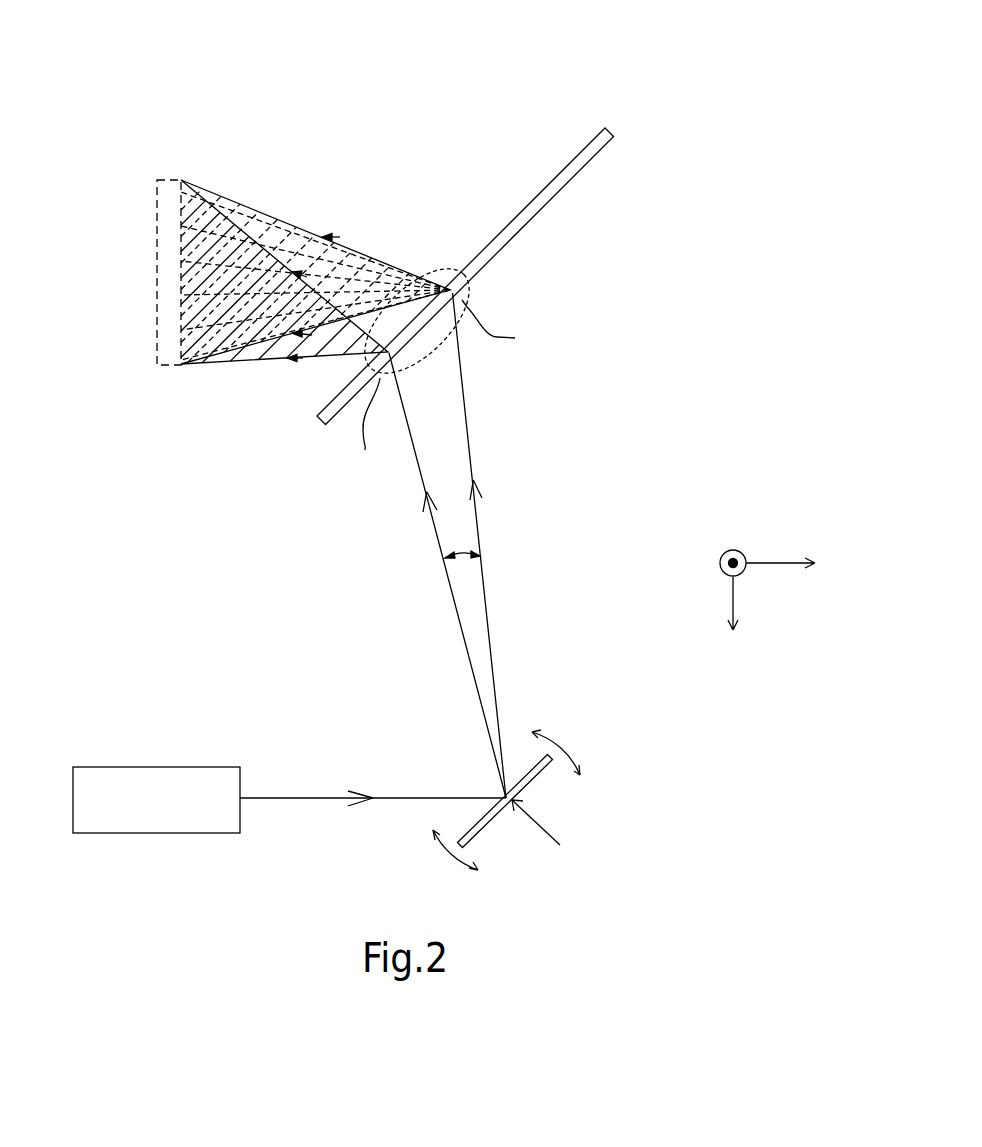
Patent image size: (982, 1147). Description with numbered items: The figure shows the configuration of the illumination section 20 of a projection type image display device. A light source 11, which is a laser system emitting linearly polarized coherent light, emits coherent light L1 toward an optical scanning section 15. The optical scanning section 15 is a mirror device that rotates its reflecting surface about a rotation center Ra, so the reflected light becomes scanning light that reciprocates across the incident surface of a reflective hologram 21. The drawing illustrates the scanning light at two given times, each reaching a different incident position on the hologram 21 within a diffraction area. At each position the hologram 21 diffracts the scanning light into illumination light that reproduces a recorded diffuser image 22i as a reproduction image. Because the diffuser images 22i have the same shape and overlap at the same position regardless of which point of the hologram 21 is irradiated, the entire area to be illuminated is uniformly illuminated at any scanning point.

The illumination section 20 is at (381, 101).
The hologram 21 is at (610, 126).
The diffuser image 22i is at (170, 367).
The light source 11 is at (155, 767).
The optical scanning section 15 is at (478, 835).
The coherent light L1 is at (291, 797).
The rotation center Ra is at (551, 830).